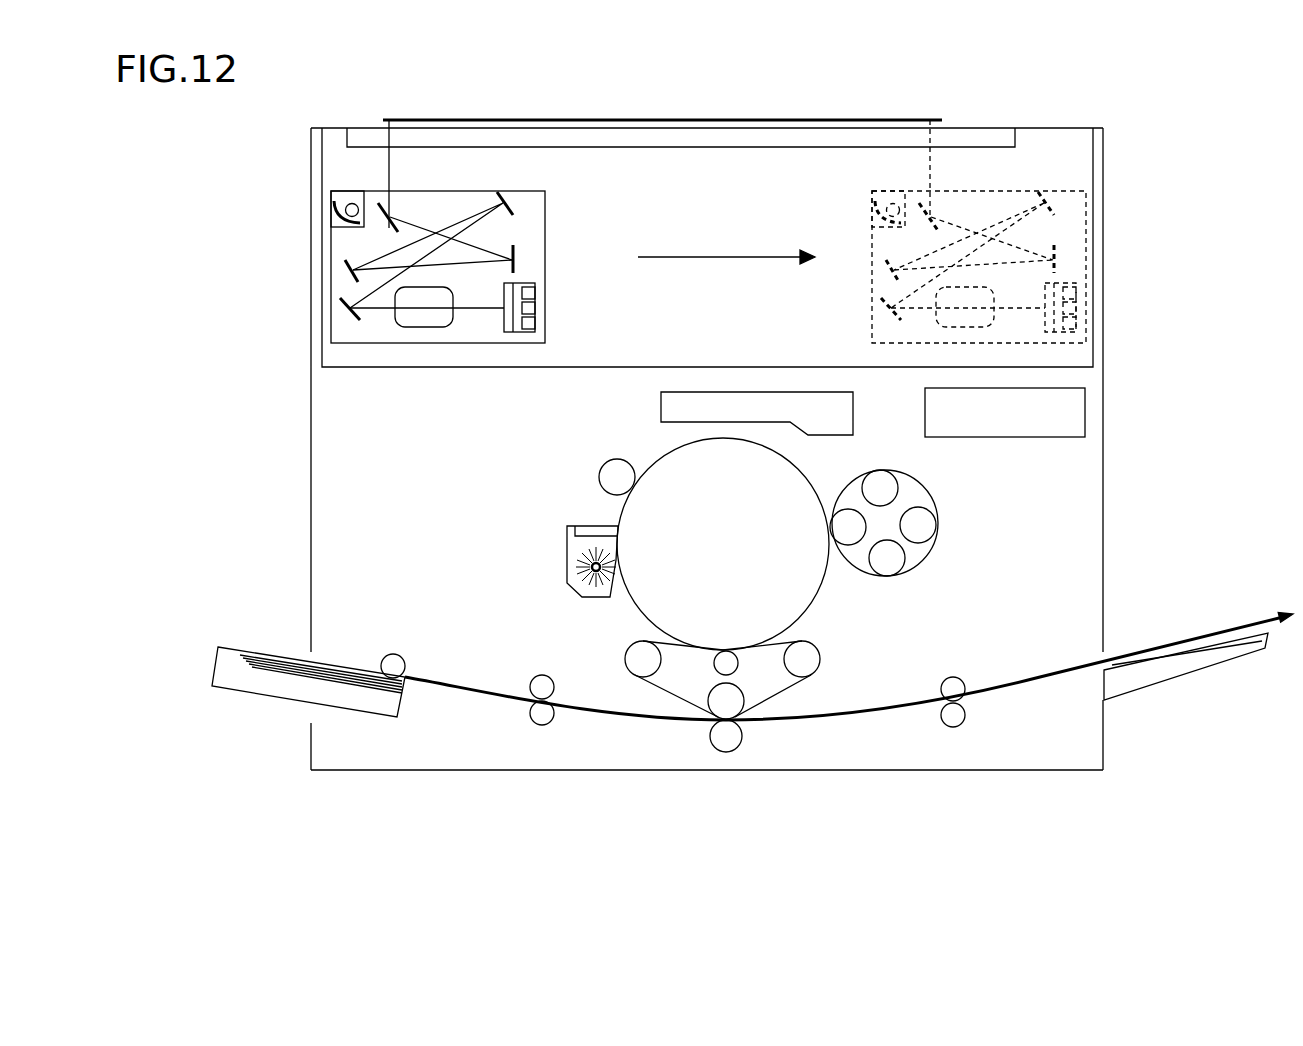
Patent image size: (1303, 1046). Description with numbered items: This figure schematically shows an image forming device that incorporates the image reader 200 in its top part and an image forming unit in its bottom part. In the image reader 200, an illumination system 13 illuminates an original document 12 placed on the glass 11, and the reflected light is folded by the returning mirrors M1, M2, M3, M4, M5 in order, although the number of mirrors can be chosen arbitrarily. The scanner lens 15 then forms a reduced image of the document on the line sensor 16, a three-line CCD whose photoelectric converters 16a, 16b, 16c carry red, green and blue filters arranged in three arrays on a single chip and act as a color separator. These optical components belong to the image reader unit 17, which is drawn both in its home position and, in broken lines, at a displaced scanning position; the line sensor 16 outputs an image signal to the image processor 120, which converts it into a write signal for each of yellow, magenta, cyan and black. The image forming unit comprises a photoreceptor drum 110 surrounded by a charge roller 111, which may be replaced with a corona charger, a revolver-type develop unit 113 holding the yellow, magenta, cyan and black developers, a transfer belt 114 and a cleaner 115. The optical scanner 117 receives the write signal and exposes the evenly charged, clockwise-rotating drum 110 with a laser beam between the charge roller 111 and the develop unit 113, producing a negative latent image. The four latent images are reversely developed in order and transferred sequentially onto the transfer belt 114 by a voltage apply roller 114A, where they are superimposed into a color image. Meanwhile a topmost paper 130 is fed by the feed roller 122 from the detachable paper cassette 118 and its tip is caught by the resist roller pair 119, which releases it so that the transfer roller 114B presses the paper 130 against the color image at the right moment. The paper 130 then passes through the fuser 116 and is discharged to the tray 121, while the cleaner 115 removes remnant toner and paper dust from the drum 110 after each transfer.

The image reader 200 is at (1067, 135).
The platen glass 11 is at (363, 133).
The original document 12 is at (412, 118).
The illumination system 13 is at (343, 195).
The returning mirror M1 is at (398, 232).
The returning mirror M2 is at (512, 197).
The returning mirror M3 is at (358, 282).
The returning mirror M4 is at (513, 244).
The returning mirror M5 is at (360, 320).
The scanner lens 15 is at (413, 320).
The line sensor 16 is at (535, 283).
The photoelectric converter 16a is at (535, 291).
The photoelectric converter 16b is at (535, 308).
The photoelectric converter 16c is at (535, 325).
The image reader unit 17 is at (331, 337).
The optical scanner 117 is at (670, 407).
The image processor 120 is at (1072, 420).
The photoreceptor drum 110 is at (706, 556).
The charge roller 111 is at (612, 488).
The revolver-type develop unit 113 is at (933, 548).
The cleaner 115 is at (594, 592).
The transfer belt 114 is at (817, 668).
The voltage apply roller 114A is at (727, 663).
The transfer roller 114B is at (725, 737).
The fuser 116 is at (953, 689).
The paper cassette 118 is at (363, 702).
The paper 130 is at (270, 662).
The feed roller 122 is at (398, 668).
The resist roller pair 119 is at (548, 688).
The tray 121 is at (1167, 668).